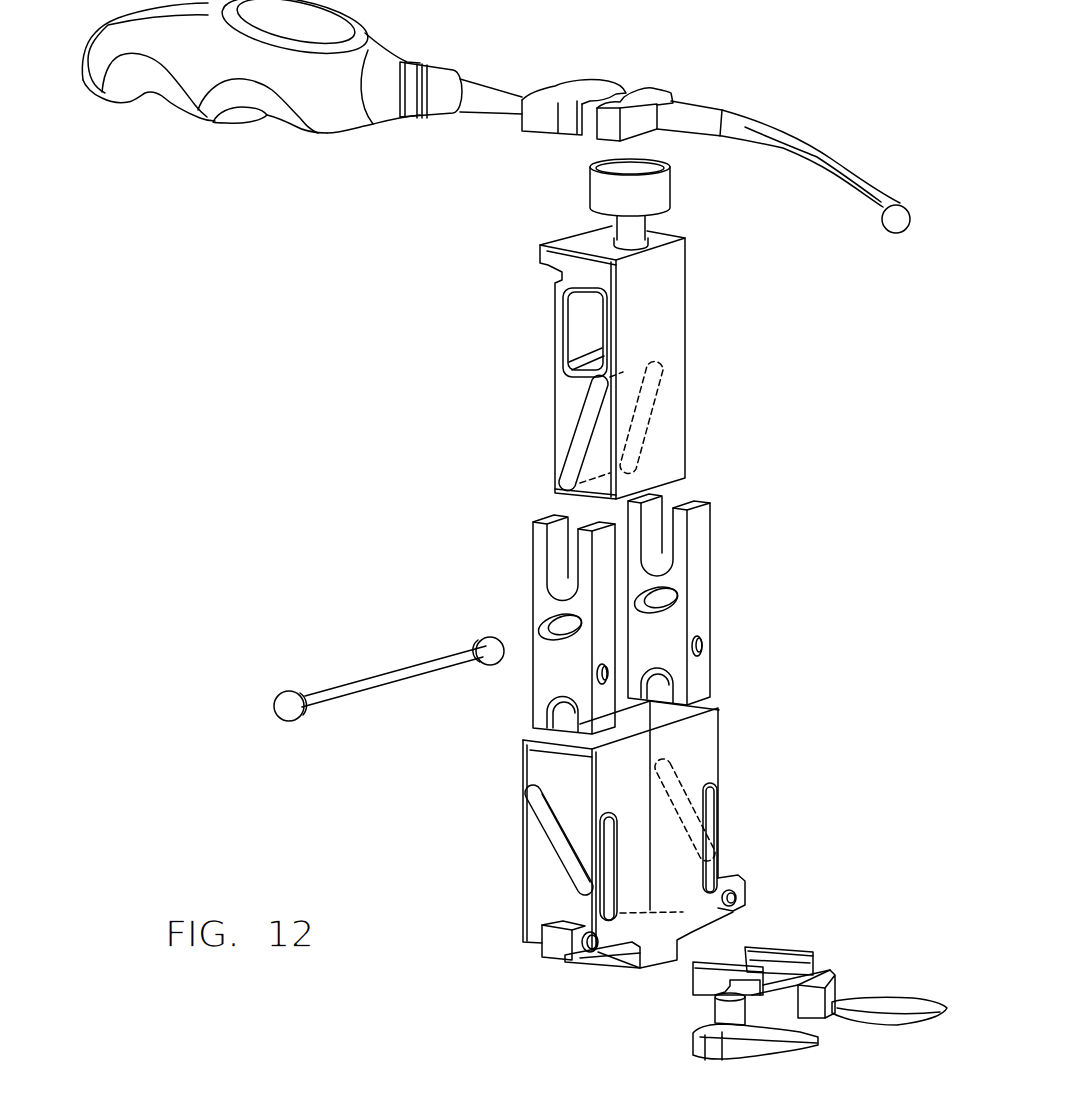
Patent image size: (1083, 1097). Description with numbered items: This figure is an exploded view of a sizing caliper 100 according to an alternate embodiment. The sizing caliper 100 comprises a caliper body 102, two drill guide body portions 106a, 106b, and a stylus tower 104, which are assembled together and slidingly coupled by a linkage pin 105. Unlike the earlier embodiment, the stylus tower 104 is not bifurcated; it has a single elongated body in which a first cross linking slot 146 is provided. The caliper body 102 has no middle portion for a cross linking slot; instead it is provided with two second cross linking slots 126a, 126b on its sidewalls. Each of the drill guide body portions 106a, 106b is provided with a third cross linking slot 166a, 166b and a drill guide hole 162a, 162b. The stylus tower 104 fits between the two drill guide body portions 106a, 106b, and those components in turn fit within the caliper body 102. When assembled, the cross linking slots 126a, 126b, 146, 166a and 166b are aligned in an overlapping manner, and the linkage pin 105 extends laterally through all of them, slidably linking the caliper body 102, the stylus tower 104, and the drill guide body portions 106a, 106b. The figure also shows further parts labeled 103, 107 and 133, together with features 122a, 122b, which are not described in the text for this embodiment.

The sizing caliper 100 is at (810, 426).
The caliper body 102 is at (706, 732).
The elongate shaft 103 is at (778, 120).
The stylus tower 104 is at (680, 272).
The linkage pin 105 is at (347, 690).
The drill guide body portion 106a is at (540, 552).
The drill guide body portion 106b is at (700, 521).
The clip member 107 is at (832, 977).
The first vertical slot 122a is at (590, 898).
The second vertical slot 122b is at (720, 831).
The second cross linking slot 126a is at (527, 818).
The second cross linking slot 126b is at (668, 768).
The handle 133 is at (212, 110).
The first cross linking slot 146 is at (583, 433).
The drill guide hole 162a is at (585, 681).
The drill guide hole 162b is at (702, 654).
The third cross linking slot 166a is at (538, 626).
The third cross linking slot 166b is at (680, 604).